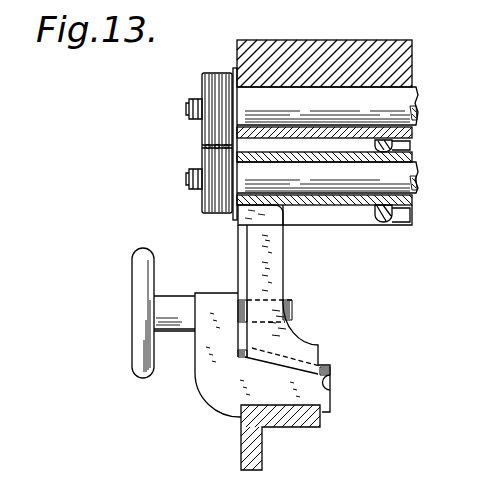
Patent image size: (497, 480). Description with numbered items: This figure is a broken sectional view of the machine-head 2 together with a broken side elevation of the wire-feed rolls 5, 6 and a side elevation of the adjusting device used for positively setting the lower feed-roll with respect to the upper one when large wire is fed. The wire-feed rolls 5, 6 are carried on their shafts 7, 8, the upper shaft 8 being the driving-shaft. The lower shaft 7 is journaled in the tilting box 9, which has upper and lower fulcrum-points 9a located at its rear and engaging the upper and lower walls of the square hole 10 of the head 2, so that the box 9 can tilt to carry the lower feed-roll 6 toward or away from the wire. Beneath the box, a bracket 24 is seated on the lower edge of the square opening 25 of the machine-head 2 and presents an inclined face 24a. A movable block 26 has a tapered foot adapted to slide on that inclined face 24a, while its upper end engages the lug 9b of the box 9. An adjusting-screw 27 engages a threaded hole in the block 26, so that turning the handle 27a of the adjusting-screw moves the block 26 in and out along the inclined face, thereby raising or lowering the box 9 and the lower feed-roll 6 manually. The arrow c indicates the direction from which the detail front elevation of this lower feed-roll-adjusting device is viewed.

The machine-head 2 is at (331, 38).
The wire-feed roll 5 is at (200, 86).
The lower wire-feed roll 6 is at (200, 153).
The lower feed-roll shaft 7 is at (192, 182).
The upper feed-roll shaft 8 is at (185, 108).
The tilting box 9 is at (338, 206).
The fulcrum-points 9a is at (395, 146).
The lug of the box 9b is at (240, 219).
The square hole 10 is at (360, 218).
The bracket 24 is at (246, 387).
The inclined face 24a is at (332, 384).
The square opening 25 is at (244, 258).
The movable block 26 is at (320, 345).
The adjusting-screw 27 is at (294, 311).
The handle 27a is at (132, 368).
The arrow c is at (20, 317).